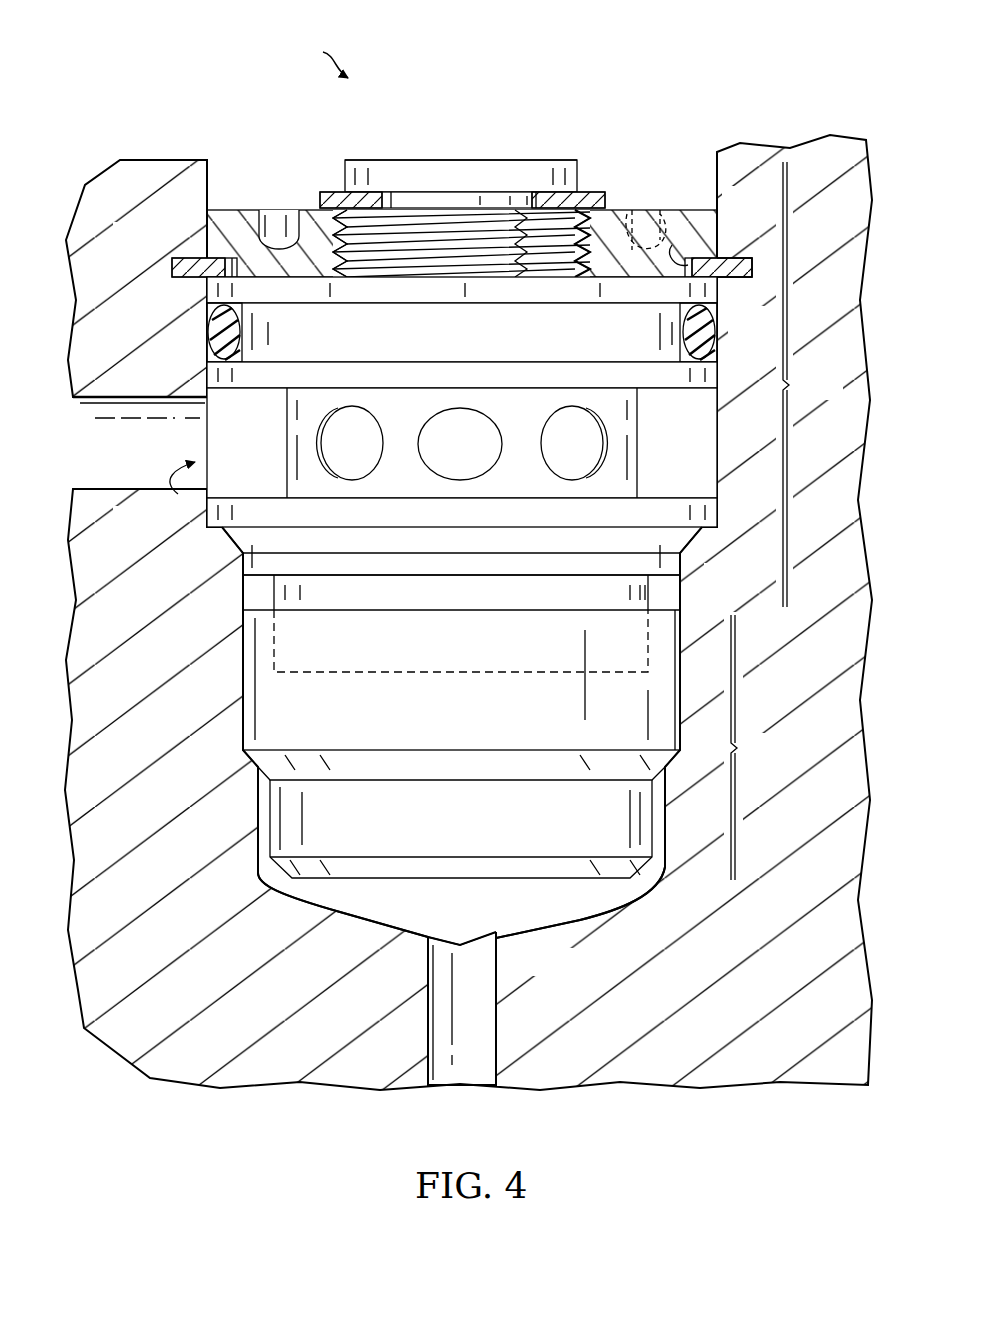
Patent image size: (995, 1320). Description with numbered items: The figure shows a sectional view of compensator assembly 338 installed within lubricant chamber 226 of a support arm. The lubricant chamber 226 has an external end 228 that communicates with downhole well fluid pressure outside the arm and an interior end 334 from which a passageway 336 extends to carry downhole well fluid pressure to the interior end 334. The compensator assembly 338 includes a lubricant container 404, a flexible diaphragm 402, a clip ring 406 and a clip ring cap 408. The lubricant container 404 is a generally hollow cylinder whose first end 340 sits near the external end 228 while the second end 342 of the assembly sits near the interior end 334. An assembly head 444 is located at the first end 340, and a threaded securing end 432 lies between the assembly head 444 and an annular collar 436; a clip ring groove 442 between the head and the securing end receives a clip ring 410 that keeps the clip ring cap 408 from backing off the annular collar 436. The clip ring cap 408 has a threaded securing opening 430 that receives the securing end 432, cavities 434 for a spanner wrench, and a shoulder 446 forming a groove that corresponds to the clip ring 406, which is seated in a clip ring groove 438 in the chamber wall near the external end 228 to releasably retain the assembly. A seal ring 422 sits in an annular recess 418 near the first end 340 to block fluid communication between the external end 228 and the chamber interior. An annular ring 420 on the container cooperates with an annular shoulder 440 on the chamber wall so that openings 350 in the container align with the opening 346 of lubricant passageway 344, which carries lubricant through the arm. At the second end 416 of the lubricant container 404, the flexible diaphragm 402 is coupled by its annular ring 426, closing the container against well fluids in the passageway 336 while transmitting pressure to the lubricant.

The compensator assembly 338 is at (325, 51).
The clip ring cap 408 is at (207, 238).
The external end 228 is at (225, 183).
The cavities 434 is at (284, 222).
The clip ring 410 is at (330, 196).
The assembly head 444 is at (404, 168).
The first end 340 is at (452, 168).
The securing end 432 is at (492, 232).
The clip ring groove 442 is at (540, 205).
The shoulder 446 is at (204, 252).
The clip ring groove 438 is at (750, 275).
The clip ring 406 is at (190, 278).
The seal ring 422 is at (245, 320).
The securing opening 430 is at (370, 250).
The annular collar 436 is at (452, 292).
The openings 350 is at (490, 410).
The annular recess 418 is at (228, 368).
The lubricant passageway 344 is at (143, 459).
The opening 346 is at (178, 494).
The annular shoulder 440 is at (248, 540).
The annular ring 420 is at (462, 527).
The annular ring 426 is at (668, 605).
The lubricant container 404 is at (812, 384).
The second end 416 is at (448, 673).
The flexible diaphragm 402 is at (760, 747).
The lubricant chamber 226 is at (515, 893).
The second end 342 is at (490, 882).
The interior end 334 is at (468, 950).
The passageway 336 is at (468, 1078).